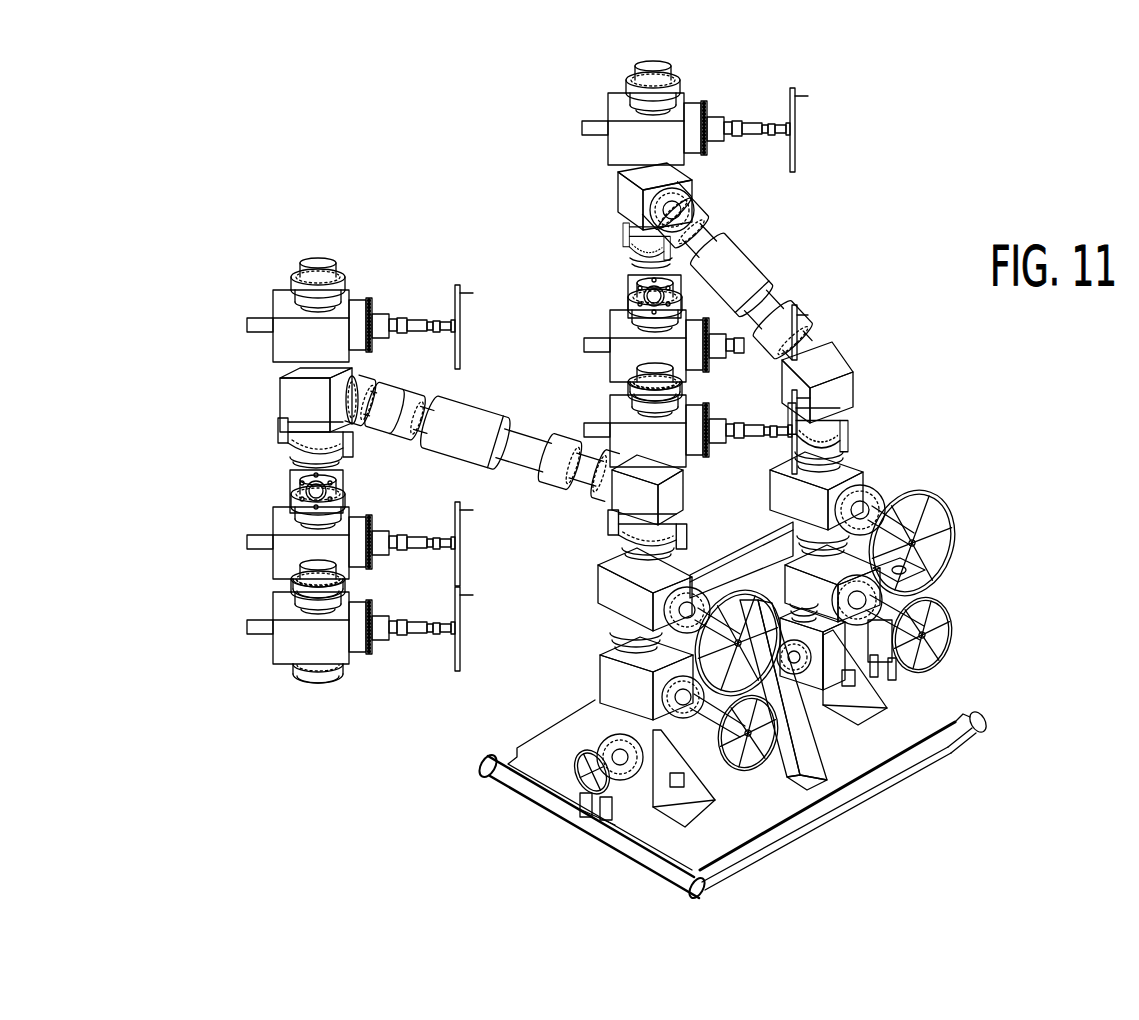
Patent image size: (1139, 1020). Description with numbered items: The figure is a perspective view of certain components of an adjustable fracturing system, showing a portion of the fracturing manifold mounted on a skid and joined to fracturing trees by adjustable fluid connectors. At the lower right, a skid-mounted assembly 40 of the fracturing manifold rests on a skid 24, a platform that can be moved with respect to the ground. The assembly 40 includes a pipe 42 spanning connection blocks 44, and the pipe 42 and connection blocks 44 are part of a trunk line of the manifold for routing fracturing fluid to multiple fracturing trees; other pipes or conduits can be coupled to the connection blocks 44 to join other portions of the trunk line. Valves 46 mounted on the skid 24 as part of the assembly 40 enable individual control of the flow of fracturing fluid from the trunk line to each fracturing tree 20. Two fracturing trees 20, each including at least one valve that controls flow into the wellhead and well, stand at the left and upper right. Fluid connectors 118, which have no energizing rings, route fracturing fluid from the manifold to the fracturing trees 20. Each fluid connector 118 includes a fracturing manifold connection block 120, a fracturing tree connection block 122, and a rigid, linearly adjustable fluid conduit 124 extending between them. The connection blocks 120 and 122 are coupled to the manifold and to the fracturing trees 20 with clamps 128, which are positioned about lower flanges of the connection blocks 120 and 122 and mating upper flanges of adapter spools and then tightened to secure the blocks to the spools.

The fracturing tree 20 is at (244, 566).
The skid 24 is at (752, 788).
The skid-mounted assembly 40 is at (845, 753).
The pipe 42 is at (773, 712).
The connection blocks 44 is at (607, 700).
The valves 46 is at (613, 593).
The fluid connectors 118 is at (439, 453).
The fracturing manifold connection blocks 120 is at (614, 497).
The fracturing tree connection blocks 122 is at (292, 395).
The rigid, linearly adjustable fluid conduits 124 is at (489, 402).
The clamps 128 is at (283, 441).